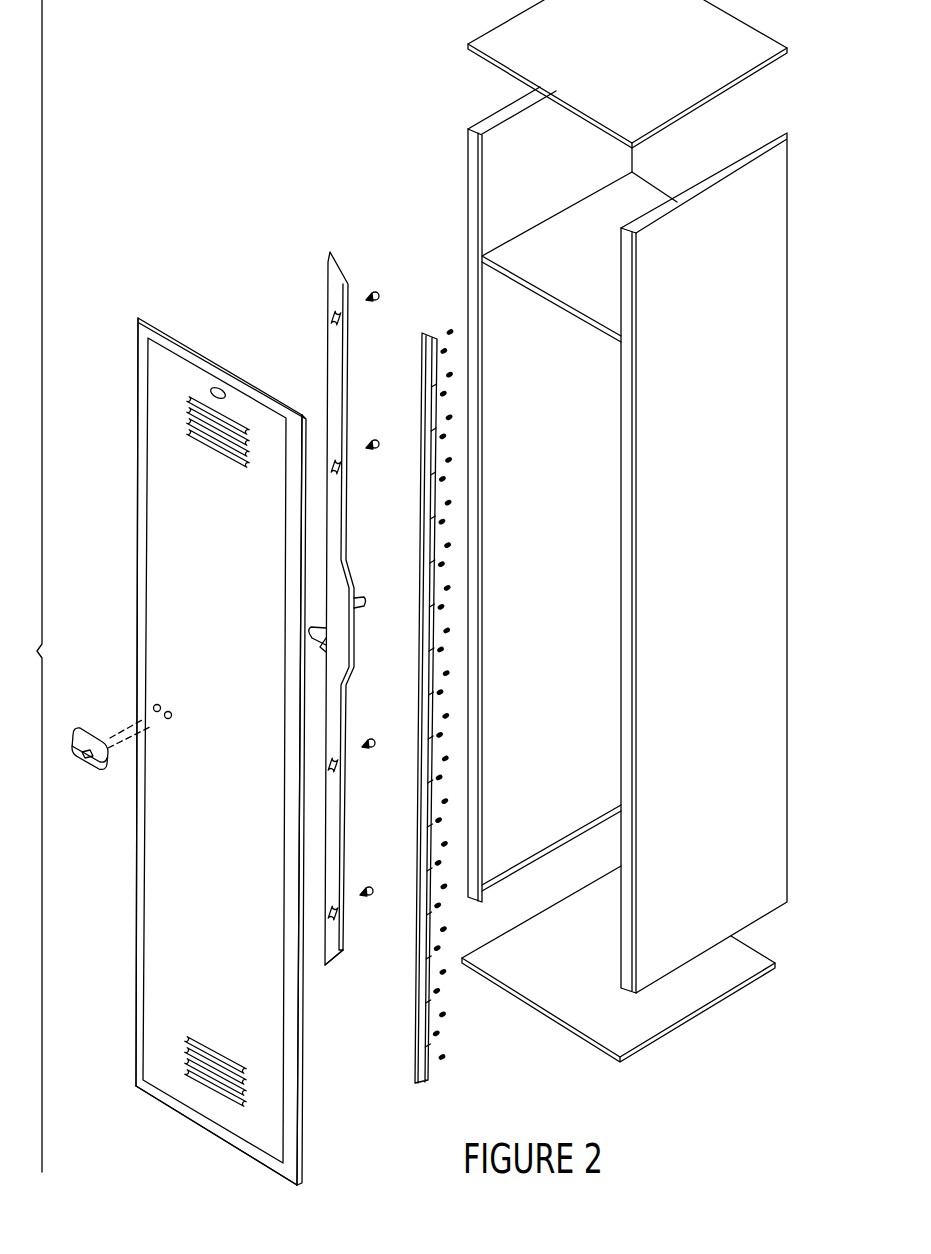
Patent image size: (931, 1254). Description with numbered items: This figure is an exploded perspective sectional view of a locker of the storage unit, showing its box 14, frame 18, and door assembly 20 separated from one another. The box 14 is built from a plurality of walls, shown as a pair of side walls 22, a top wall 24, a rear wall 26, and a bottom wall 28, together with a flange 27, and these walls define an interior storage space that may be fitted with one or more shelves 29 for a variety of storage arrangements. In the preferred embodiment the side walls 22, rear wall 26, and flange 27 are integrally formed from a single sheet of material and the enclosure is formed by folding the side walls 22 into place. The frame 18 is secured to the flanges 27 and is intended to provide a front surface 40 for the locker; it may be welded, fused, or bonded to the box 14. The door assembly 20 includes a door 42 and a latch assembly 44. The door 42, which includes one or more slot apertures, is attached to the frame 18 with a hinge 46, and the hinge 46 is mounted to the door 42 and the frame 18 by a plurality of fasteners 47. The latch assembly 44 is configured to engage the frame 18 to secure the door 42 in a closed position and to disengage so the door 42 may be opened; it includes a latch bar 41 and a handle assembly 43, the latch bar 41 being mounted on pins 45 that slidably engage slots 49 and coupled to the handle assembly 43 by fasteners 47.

The box 14 is at (796, 264).
The frame 18 is at (208, 1133).
The door assembly 20 is at (150, 306).
The side walls 22 is at (552, 557).
The top wall 24 is at (619, 54).
The rear wall 26 is at (733, 127).
The flange 27 is at (473, 190).
The bottom wall 28 is at (668, 1007).
The shelf 29 is at (548, 223).
The front surface 40 is at (140, 913).
The latch bar 41 is at (332, 963).
The door 42 is at (163, 965).
The handle assembly 43 is at (82, 756).
The latch assembly 44 is at (315, 262).
The pins 45 is at (376, 301).
The hinge 46 is at (423, 1088).
The fasteners 47 is at (450, 328).
The slots 49 is at (343, 284).